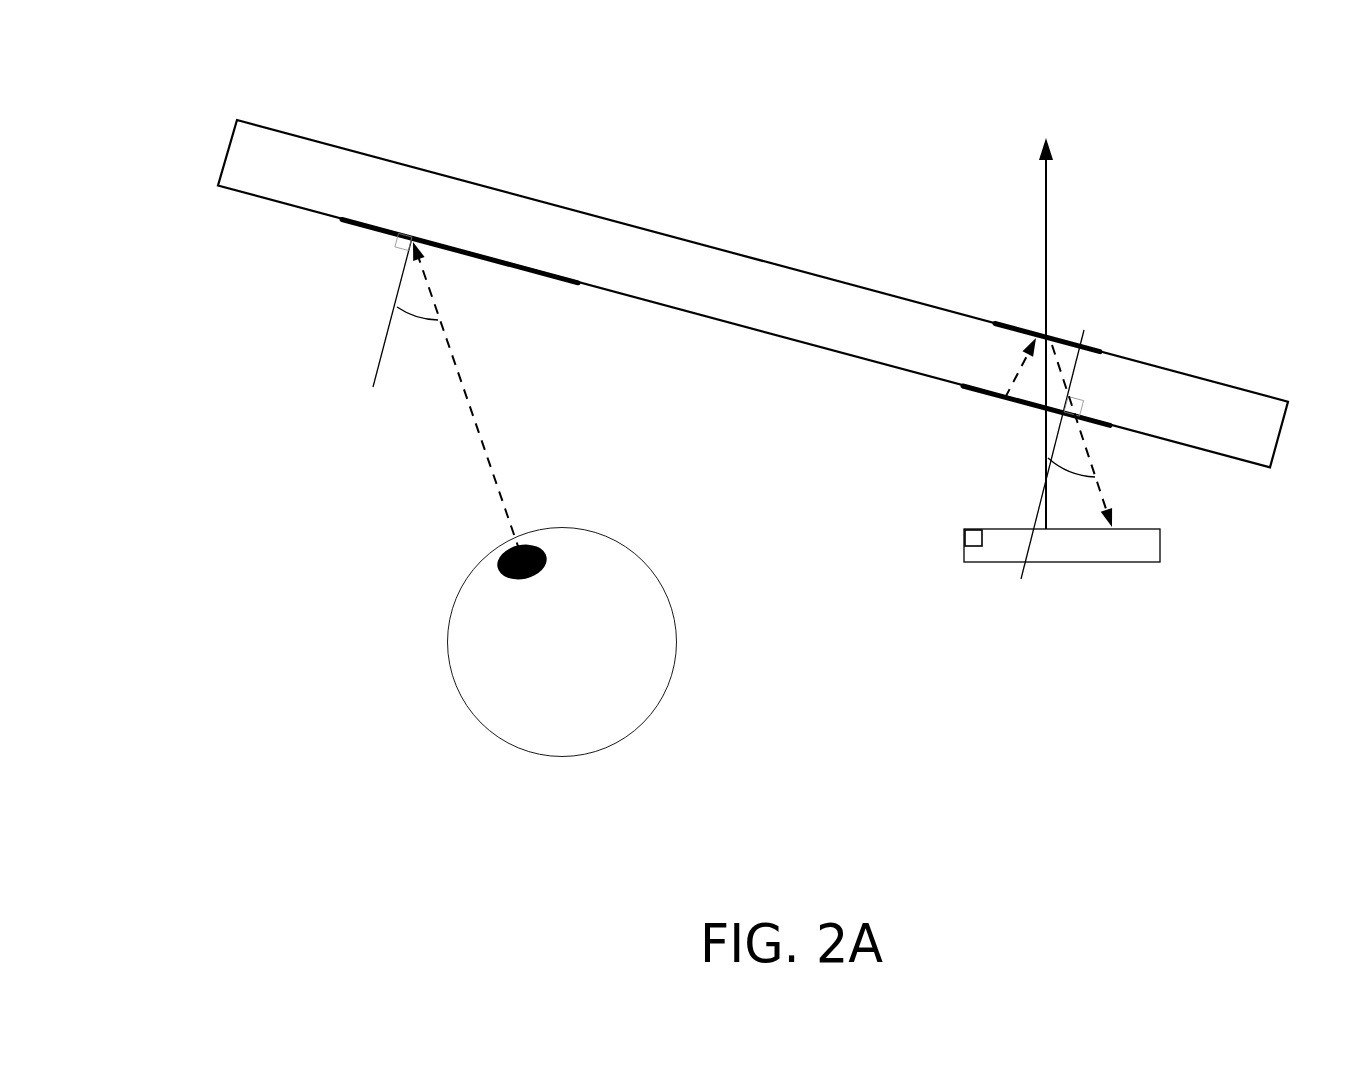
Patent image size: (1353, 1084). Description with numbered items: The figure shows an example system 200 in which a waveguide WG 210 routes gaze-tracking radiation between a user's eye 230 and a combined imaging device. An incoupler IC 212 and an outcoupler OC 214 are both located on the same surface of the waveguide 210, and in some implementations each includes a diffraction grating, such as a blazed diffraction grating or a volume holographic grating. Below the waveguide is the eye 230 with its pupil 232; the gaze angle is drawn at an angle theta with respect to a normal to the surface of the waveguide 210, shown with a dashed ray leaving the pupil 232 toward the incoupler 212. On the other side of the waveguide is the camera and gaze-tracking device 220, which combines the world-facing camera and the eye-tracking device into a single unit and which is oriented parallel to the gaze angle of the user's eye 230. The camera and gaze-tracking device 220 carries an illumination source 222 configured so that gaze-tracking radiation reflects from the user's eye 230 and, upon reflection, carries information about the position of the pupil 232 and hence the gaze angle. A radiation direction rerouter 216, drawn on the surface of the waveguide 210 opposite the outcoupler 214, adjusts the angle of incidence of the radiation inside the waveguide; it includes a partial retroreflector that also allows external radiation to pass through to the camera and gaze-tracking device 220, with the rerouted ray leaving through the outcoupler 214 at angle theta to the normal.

The system 200 is at (166, 82).
The waveguide 210 is at (792, 255).
The incoupler 212 is at (508, 273).
The outcoupler 214 is at (978, 401).
The radiation direction rerouter 216 is at (1086, 336).
The camera and gaze-tracking device 220 is at (1072, 582).
The illumination source 222 is at (953, 540).
The eye 230 is at (603, 686).
The pupil 232 is at (560, 540).